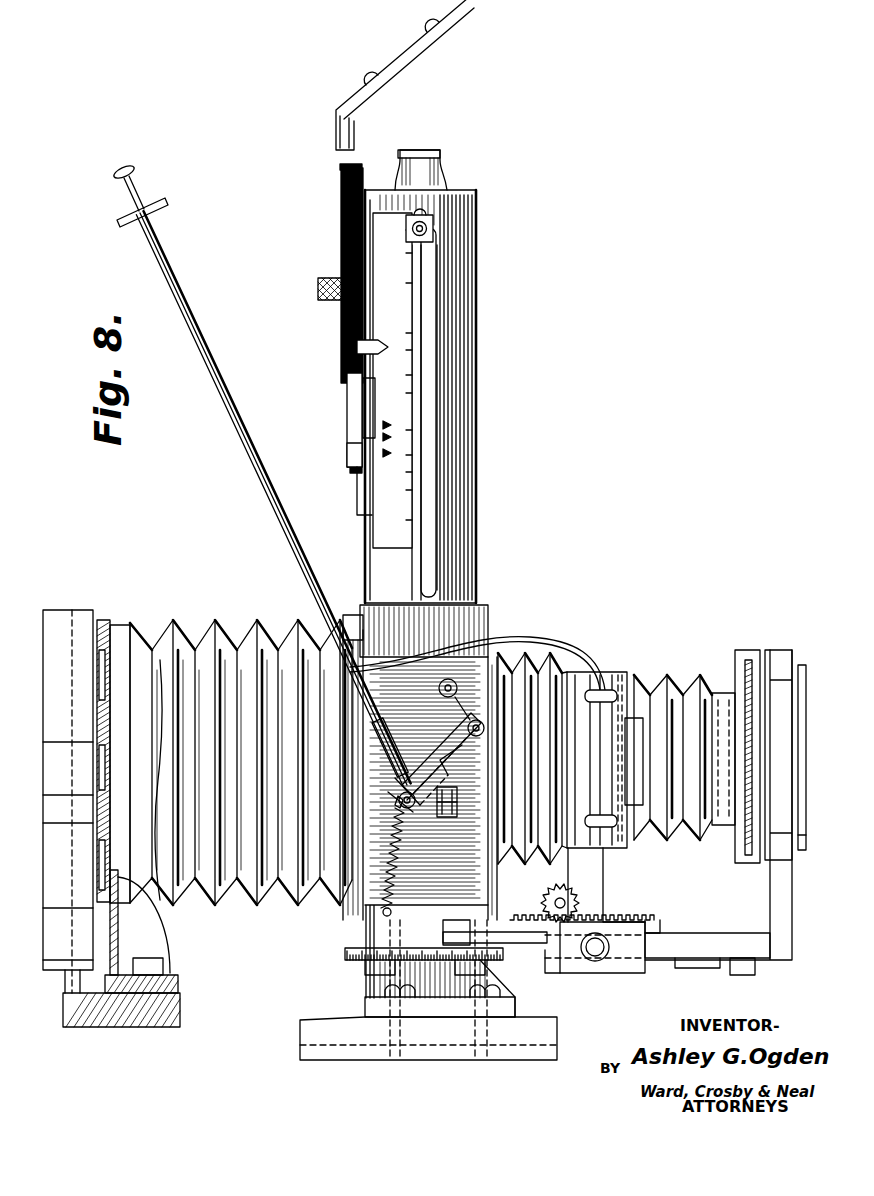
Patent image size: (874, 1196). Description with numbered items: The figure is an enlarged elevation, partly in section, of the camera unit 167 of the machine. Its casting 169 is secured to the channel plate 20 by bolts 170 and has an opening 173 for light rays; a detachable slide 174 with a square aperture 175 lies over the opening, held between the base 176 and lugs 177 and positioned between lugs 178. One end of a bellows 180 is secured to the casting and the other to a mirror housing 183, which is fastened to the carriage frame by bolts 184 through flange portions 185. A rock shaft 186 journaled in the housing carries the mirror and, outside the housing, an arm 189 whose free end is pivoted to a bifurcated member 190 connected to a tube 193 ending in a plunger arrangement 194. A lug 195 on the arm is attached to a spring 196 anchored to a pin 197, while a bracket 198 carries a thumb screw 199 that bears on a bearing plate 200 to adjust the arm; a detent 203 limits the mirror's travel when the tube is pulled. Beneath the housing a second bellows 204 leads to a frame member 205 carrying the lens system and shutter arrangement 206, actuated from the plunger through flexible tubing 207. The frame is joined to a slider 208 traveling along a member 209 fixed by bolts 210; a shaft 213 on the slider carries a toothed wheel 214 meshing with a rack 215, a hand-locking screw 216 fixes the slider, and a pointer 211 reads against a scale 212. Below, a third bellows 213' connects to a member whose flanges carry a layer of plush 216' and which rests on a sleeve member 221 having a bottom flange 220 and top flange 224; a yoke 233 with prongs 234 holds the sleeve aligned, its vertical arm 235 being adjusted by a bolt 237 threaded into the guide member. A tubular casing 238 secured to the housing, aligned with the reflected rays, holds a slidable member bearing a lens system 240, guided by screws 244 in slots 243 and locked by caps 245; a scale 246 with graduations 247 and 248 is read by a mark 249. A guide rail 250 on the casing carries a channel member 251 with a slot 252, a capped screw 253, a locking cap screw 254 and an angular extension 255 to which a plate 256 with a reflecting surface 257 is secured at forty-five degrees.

The channel plate 20 is at (105, 1028).
The camera unit 167 is at (252, 628).
The casting 169 is at (180, 998).
The bolts 170 is at (168, 972).
The opening 173 is at (120, 660).
The detachable slide 174 is at (102, 722).
The square aperture 175 is at (105, 752).
The base 176 is at (100, 612).
The lugs 177 is at (86, 892).
The lugs 178 is at (106, 862).
The bellows 180 is at (206, 645).
The mirror housing 183 is at (352, 616).
The bolts 184 is at (332, 1030).
The flange portions 185 is at (370, 1008).
The rock shaft 186 is at (477, 719).
The arm 189 is at (444, 752).
The bifurcated member 190 is at (398, 800).
The tube 193 is at (262, 482).
The plunger arrangement 194 is at (118, 210).
The lug 195 is at (396, 820).
The spring 196 is at (398, 900).
The pin 197 is at (383, 913).
The bracket 198 is at (452, 812).
The thumb screw 199 is at (436, 905).
The bearing plate 200 is at (466, 762).
The detent 203 is at (438, 685).
The second bellows 204 is at (542, 658).
The frame member 205 is at (580, 670).
The automatic shutter arrangement 206 is at (608, 672).
The flexible tubing 207 is at (516, 645).
The slider 208 is at (650, 918).
The member 209 is at (708, 938).
The bolts 210 is at (345, 955).
The pointer 211 is at (502, 931).
The scale 212 is at (349, 950).
The shaft 213 is at (542, 903).
The third bellows 213' is at (680, 728).
The toothed wheel 214 is at (555, 895).
The rack 215 is at (625, 918).
The hand-locking screw 216 is at (595, 963).
The layer of plush 216' is at (741, 719).
The bottom flange 220 is at (801, 664).
The sleeve member 221 is at (801, 850).
The top flange 224 is at (752, 657).
The yoke 233 is at (772, 905).
The prongs 234 is at (778, 652).
The vertical arm 235 is at (710, 968).
The bolt 237 is at (752, 974).
The tubular casing 238 is at (368, 556).
The lens system 240 is at (512, 956).
The slots 243 is at (433, 460).
The screws 244 is at (470, 236).
The caps 245 is at (422, 242).
The scale 246 is at (376, 405).
The graduations 247 is at (413, 340).
The graduations 248 is at (358, 342).
The mark 249 is at (412, 212).
The guide rail 250 is at (358, 492).
The channel member 251 is at (341, 325).
The slot 252 is at (350, 395).
The capped screw 253 is at (325, 287).
The cap screw 254 is at (338, 277).
The angular extension 255 is at (348, 100).
The plate 256 is at (385, 62).
The reflecting surface 257 is at (447, 16).